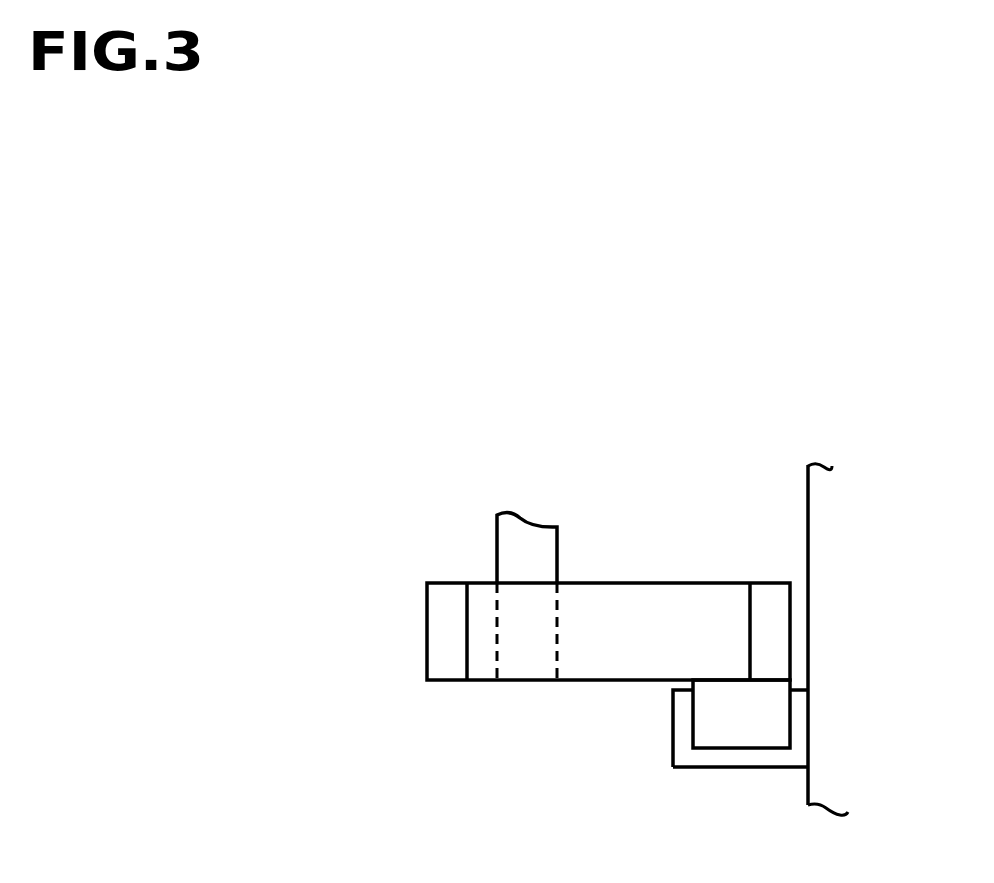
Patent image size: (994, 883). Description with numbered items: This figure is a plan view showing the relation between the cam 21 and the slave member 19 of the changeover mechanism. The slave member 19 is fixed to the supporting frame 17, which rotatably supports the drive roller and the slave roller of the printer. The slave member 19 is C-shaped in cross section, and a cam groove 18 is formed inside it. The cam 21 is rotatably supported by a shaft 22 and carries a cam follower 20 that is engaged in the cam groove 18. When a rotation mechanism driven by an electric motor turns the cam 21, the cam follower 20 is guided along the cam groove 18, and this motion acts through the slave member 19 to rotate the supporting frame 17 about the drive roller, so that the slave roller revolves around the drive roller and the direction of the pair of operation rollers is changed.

The supporting frame 17 is at (817, 510).
The cam groove 18 is at (700, 713).
The slave member 19 is at (790, 757).
The cam follower 20 is at (770, 712).
The cam 21 is at (587, 657).
The shaft 22 is at (513, 565).